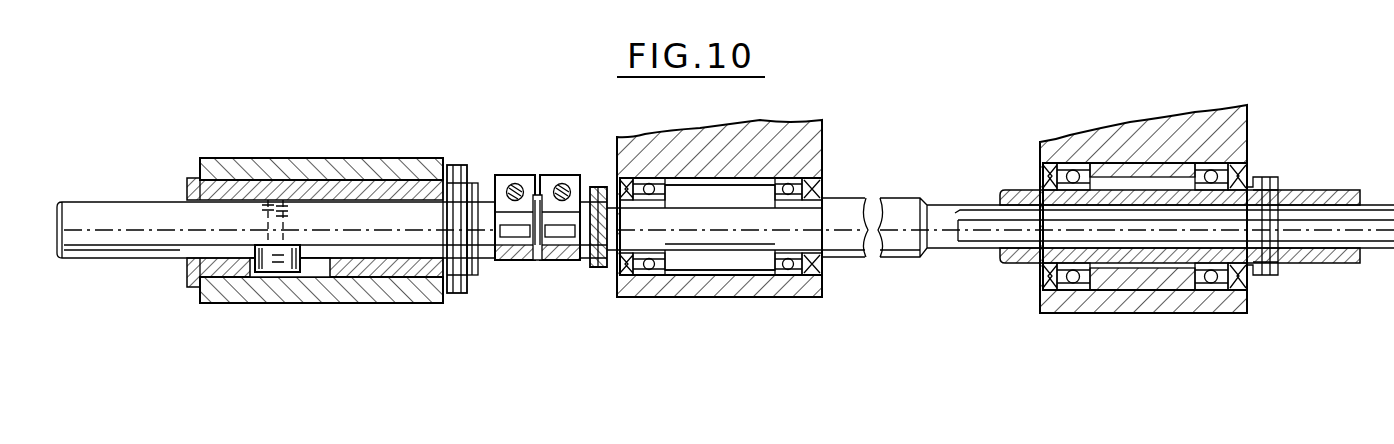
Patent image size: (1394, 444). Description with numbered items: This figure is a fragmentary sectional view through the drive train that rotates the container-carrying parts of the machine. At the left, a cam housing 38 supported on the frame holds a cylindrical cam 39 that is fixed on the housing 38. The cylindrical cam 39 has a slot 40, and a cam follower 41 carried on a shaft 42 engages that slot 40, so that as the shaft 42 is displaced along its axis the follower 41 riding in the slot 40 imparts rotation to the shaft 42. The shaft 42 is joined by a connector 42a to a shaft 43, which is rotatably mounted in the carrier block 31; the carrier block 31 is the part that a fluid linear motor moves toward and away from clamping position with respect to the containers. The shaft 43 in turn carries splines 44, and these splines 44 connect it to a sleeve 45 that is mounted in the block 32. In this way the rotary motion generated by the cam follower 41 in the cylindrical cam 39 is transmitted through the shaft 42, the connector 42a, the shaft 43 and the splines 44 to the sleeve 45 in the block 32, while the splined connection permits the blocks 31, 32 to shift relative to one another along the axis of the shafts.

The carrier block 31 is at (812, 153).
The block 32 is at (1246, 130).
The cam housing 38 is at (401, 157).
The cylindrical cam 39 is at (386, 265).
The slot 40 is at (308, 270).
The cam follower 41 is at (280, 266).
The shaft 42 is at (161, 246).
The connector 42a is at (524, 175).
The shaft 43 is at (716, 236).
The splines 44 is at (985, 232).
The sleeve 45 is at (1103, 255).